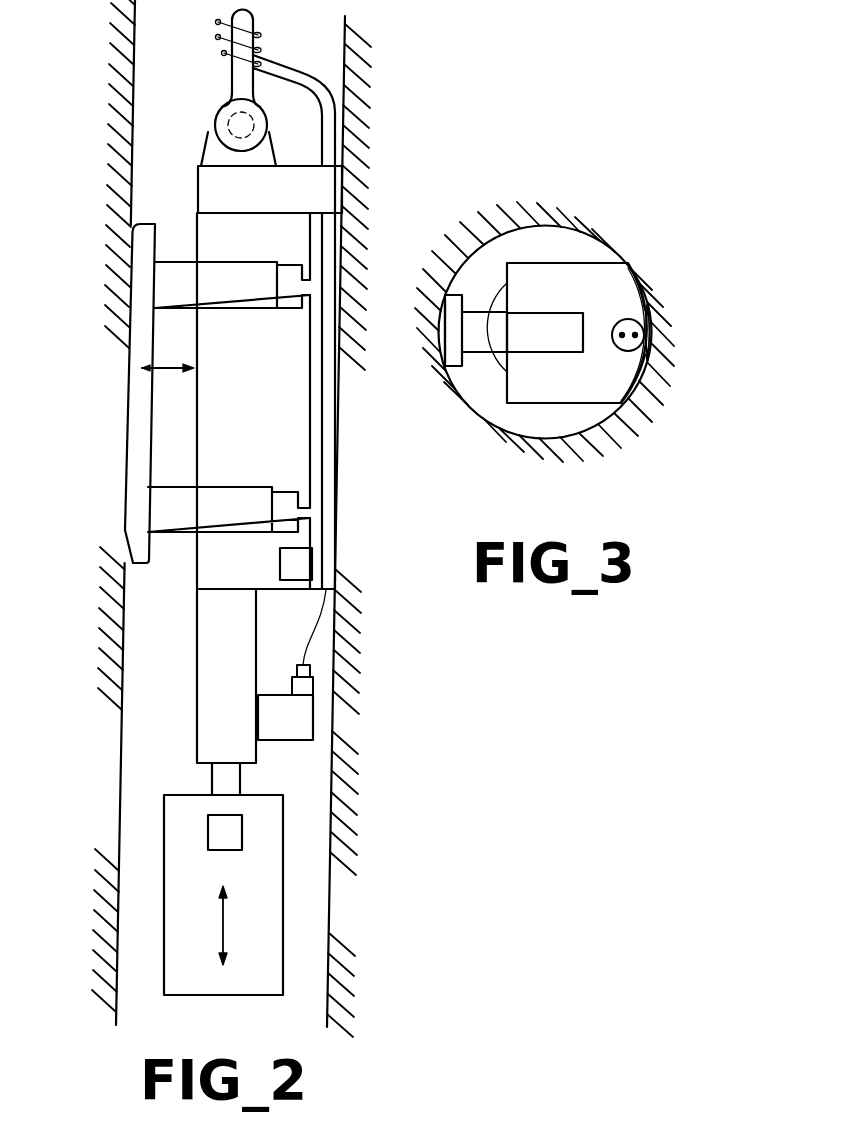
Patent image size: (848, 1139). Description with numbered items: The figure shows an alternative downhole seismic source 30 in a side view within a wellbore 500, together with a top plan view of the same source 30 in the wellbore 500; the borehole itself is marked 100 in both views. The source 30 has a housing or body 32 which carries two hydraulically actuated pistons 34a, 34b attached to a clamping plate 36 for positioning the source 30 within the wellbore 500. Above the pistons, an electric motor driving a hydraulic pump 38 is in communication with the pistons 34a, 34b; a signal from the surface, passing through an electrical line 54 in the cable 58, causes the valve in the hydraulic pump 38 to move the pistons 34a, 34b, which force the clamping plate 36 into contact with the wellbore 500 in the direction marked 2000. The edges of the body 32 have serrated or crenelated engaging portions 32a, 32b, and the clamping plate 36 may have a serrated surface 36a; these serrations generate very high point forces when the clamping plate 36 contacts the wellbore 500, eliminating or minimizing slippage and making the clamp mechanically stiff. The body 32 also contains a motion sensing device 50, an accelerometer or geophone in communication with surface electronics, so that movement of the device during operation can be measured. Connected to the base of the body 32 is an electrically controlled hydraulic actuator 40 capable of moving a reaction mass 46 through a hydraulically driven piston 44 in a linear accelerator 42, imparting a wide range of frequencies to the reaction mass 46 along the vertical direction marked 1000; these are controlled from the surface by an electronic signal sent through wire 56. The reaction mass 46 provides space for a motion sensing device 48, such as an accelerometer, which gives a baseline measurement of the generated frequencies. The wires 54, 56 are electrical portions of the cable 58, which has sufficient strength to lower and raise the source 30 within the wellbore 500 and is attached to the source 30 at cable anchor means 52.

In FIG. 2, the seismic source 30 is at (96, 133).
In FIG. 2, the body 32 is at (265, 401).
In FIG. 3, the body 32 is at (590, 262).
In FIG. 3, the serrated engaging portion 32a is at (638, 278).
In FIG. 3, the serrated engaging portion 32b is at (637, 383).
In FIG. 2, the hydraulically actuated piston 34a is at (255, 294).
In FIG. 3, the hydraulically actuated piston 34a is at (537, 265).
In FIG. 2, the hydraulically actuated piston 34b is at (247, 519).
In FIG. 3, the hydraulically actuated piston 34b is at (478, 307).
In FIG. 2, the clamping plate 36 is at (138, 228).
In FIG. 3, the clamping plate 36 is at (450, 293).
In FIG. 3, the serrated surface 36a is at (437, 342).
In FIG. 2, the hydraulic pump 38 is at (311, 186).
In FIG. 3, the hydraulic pump 38 is at (642, 350).
In FIG. 2, the hydraulic actuator 40 is at (303, 718).
In FIG. 2, the linear accelerator 42 is at (210, 650).
In FIG. 2, the hydraulically driven piston 44 is at (240, 780).
In FIG. 2, the reaction mass 46 is at (282, 890).
In FIG. 2, the motion sensing device 48 is at (242, 832).
In FIG. 2, the motion sensing device 50 is at (305, 565).
In FIG. 2, the cable anchor means 52 is at (222, 157).
In FIG. 3, the cable anchor means 52 is at (533, 320).
In FIG. 2, the electrical line 54 is at (321, 128).
In FIG. 3, the electrical line 54 is at (622, 343).
In FIG. 2, the wire 56 is at (329, 91).
In FIG. 3, the wire 56 is at (650, 318).
In FIG. 2, the cable 58 is at (255, 22).
In FIG. 2, the borehole 100 is at (88, 305).
In FIG. 3, the borehole 100 is at (667, 486).
In FIG. 2, the wellbore 500 is at (335, 879).
In FIG. 3, the wellbore 500 is at (490, 425).
In FIG. 2, the vertical velocity direction 1000 is at (204, 939).
In FIG. 2, the pad pressure direction 2000 is at (153, 370).